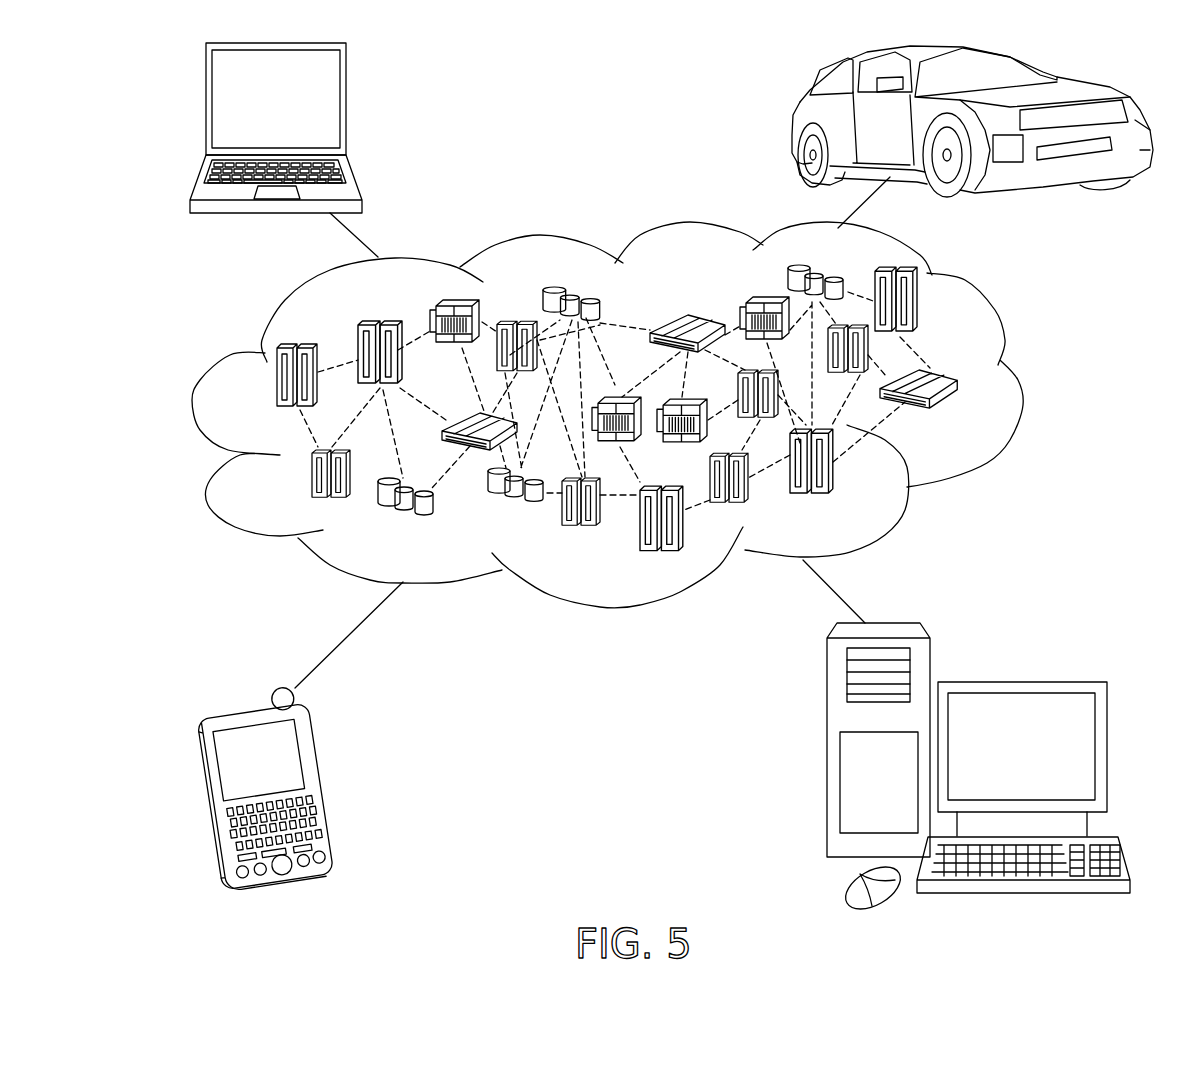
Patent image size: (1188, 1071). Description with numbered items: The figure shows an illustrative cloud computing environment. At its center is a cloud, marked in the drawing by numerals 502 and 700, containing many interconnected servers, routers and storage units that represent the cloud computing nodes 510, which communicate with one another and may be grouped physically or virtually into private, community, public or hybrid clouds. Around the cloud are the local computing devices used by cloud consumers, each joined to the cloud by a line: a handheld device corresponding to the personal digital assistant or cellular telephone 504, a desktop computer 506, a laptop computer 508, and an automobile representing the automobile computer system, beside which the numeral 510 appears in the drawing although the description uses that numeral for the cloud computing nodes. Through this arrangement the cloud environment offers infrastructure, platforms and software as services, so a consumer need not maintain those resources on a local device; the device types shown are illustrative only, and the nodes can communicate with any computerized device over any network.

The network 502 is at (1020, 382).
The mobile device 504 is at (333, 775).
The desktop computer 506 is at (1020, 680).
The laptop computer 508 is at (346, 107).
The cloud computing nodes 510 is at (797, 120).
The cloud computing environment 700 is at (962, 417).